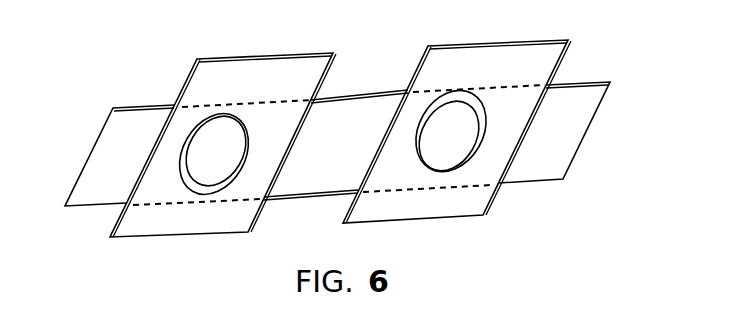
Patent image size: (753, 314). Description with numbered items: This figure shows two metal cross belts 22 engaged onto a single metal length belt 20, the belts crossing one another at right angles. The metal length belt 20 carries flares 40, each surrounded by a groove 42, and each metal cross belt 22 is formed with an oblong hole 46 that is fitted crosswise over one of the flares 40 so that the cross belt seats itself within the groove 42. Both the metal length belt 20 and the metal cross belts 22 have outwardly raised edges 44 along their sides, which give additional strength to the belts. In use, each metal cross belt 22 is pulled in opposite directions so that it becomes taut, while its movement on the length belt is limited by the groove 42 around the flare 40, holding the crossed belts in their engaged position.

The metal length belt 20 is at (588, 145).
The metal cross belt 22 is at (109, 225).
The flare 40 is at (243, 118).
The groove 42 is at (250, 143).
The outwardly raised edge 44 is at (410, 82).
The oblong hole 46 is at (190, 190).